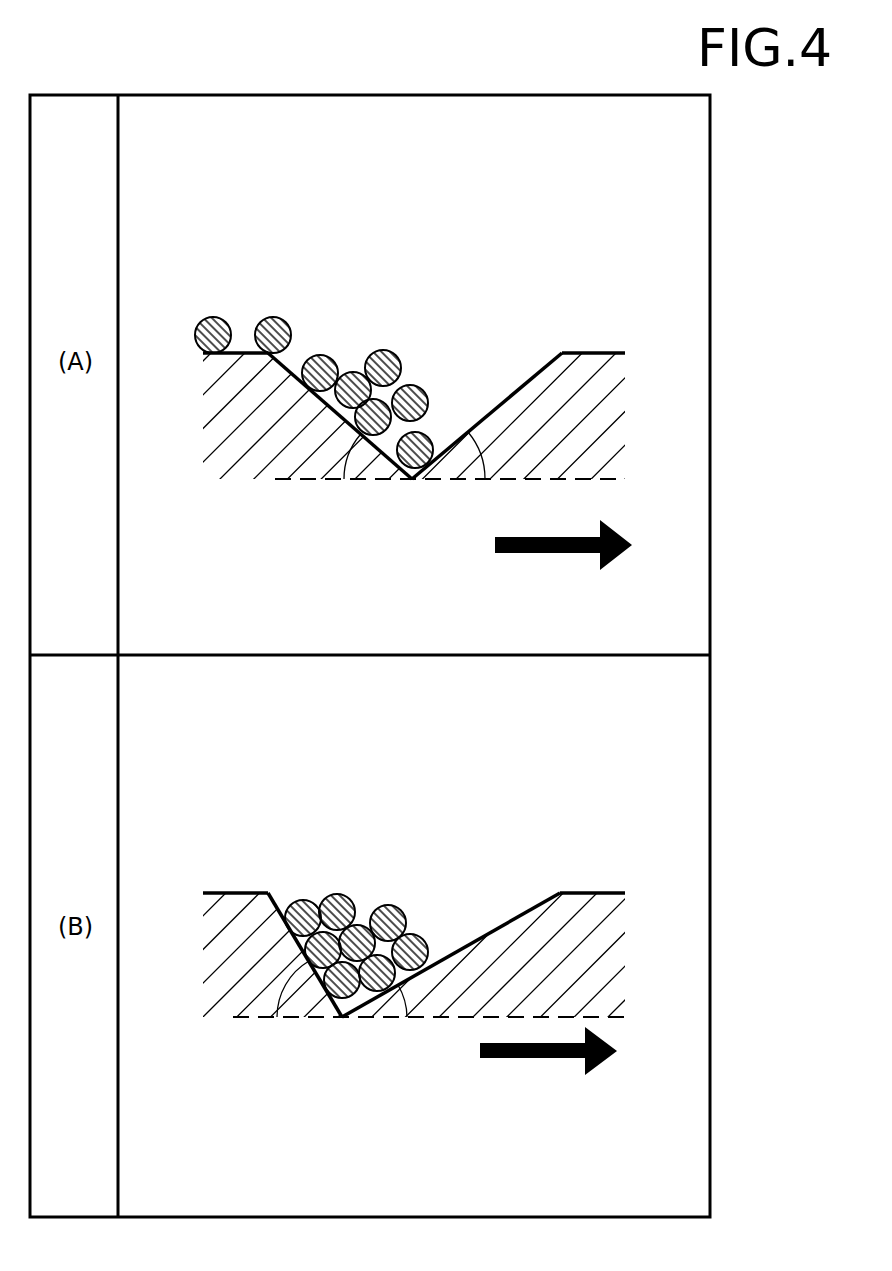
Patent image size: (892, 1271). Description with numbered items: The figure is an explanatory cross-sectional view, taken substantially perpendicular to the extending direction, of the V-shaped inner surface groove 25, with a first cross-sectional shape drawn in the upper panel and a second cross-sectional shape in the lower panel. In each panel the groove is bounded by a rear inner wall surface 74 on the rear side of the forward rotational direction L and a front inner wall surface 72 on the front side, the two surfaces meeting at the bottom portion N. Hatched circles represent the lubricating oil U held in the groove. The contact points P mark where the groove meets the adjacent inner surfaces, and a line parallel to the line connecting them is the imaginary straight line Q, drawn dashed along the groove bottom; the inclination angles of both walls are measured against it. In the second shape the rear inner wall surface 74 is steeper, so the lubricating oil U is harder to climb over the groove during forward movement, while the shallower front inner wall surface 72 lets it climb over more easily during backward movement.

The inner surface groove 25 is at (363, 287).
The front inner wall surface 72 is at (523, 383).
The rear inner wall surface 74 is at (302, 362).
The contact points P is at (268, 350).
The lubricating oil U is at (400, 372).
The bottom portion N is at (413, 480).
The imaginary straight line Q is at (363, 485).
The forward rotational direction L is at (557, 553).